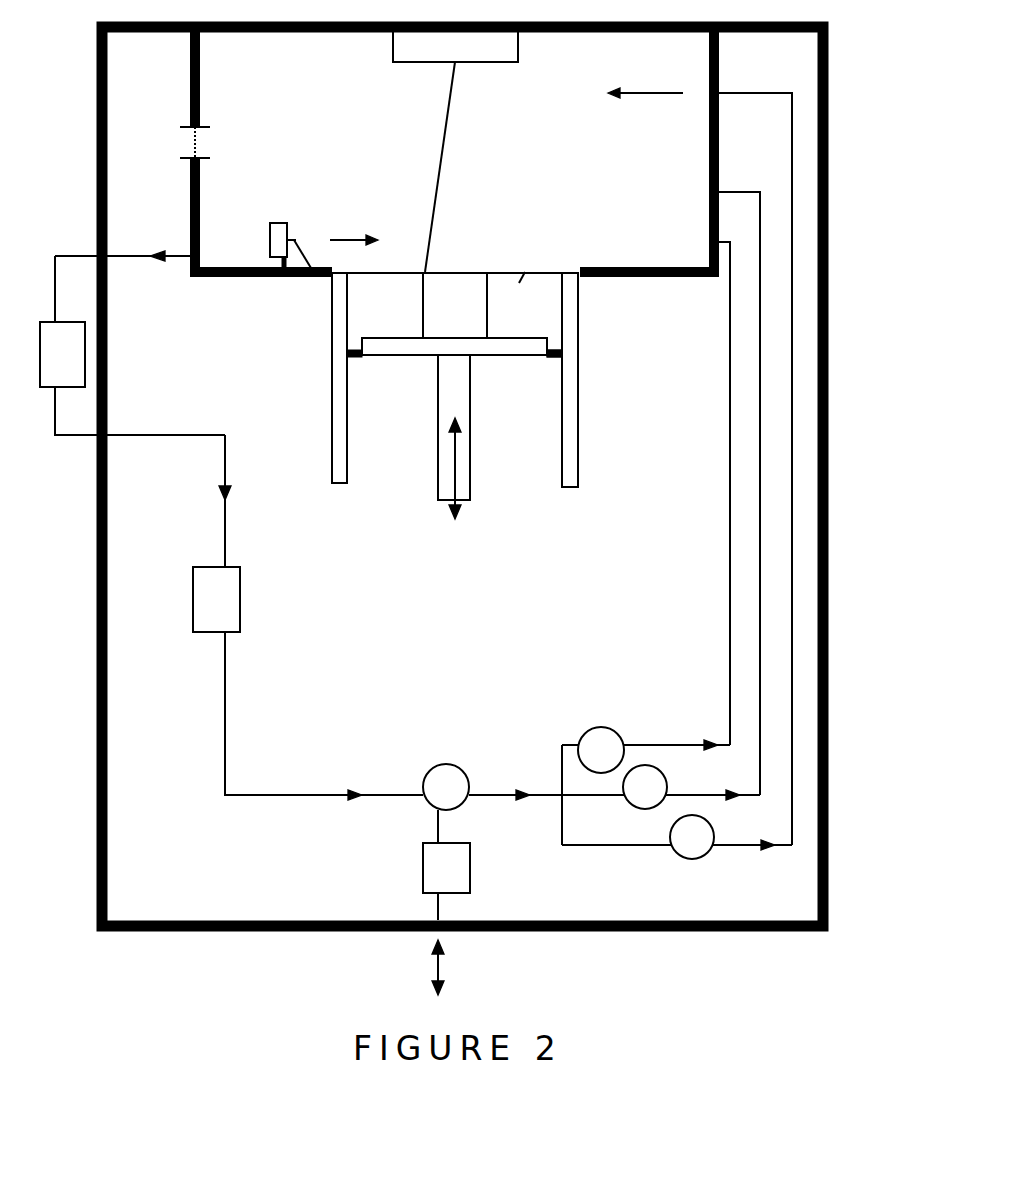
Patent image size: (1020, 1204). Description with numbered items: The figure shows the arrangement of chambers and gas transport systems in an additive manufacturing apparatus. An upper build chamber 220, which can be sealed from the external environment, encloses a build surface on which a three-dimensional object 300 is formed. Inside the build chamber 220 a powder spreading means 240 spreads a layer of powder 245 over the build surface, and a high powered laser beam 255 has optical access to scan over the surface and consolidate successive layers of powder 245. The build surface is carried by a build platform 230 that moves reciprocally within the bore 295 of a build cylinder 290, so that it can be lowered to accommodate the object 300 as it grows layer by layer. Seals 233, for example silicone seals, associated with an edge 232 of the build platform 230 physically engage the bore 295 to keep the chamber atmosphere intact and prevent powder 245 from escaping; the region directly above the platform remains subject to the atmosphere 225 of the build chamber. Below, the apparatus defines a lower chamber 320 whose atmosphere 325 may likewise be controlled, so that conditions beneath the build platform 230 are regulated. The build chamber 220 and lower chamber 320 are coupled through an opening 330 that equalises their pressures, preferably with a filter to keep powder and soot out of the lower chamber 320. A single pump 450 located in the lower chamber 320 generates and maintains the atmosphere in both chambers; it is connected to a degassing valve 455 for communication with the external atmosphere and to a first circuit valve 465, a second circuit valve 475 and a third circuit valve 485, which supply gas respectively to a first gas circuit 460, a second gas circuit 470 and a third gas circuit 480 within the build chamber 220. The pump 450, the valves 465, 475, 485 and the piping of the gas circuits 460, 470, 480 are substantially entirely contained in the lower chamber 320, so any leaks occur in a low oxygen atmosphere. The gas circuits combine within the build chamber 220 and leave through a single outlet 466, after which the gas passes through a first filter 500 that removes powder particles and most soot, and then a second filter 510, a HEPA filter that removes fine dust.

The build chamber 220 is at (649, 278).
The atmosphere of the build chamber 225 is at (305, 90).
The build platform 230 is at (379, 345).
The edge of the build platform 232 is at (549, 345).
The seals 233 is at (557, 360).
The powder spreading means 240 is at (270, 238).
The powder 245 is at (295, 244).
The laser beam 255 is at (443, 162).
The build cylinder 290 is at (337, 485).
The bore of the build cylinder 295 is at (342, 428).
The three-dimensional object 300 is at (454, 305).
The lower chamber 320 is at (829, 893).
The atmosphere of the lower chamber 325 is at (430, 590).
The opening 330 is at (210, 148).
The pump 450 is at (492, 787).
The degassing valve 455 is at (446, 902).
The first gas circuit 460 is at (792, 160).
The first circuit valve 465 is at (677, 837).
The outlet 466 is at (145, 252).
The second gas circuit 470 is at (762, 250).
The second circuit valve 475 is at (661, 787).
The third gas circuit 480 is at (730, 343).
The third circuit valve 485 is at (646, 750).
The first filter 500 is at (132, 345).
The second filter 510 is at (308, 617).